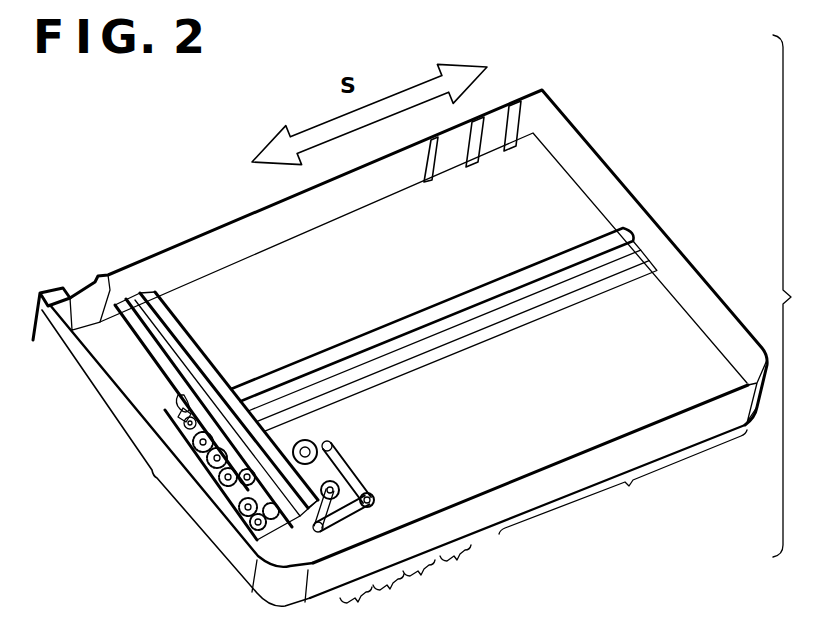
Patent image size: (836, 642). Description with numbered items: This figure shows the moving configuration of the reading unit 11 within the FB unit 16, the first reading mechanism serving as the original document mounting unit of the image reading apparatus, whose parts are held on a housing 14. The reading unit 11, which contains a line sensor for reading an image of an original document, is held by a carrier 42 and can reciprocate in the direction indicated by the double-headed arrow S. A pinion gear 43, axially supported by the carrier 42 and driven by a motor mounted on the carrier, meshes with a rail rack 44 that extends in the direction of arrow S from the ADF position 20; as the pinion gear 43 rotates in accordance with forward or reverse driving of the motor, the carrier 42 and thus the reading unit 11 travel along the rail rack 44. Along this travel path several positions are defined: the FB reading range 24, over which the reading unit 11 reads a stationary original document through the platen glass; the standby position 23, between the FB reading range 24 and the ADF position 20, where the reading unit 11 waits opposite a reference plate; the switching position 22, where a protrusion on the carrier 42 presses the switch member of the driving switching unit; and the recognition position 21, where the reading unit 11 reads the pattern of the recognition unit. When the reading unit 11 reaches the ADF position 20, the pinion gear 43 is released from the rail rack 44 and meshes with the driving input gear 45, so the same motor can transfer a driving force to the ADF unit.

The reading unit 11 is at (192, 370).
The housing 14 is at (568, 143).
The FB unit 16 is at (802, 296).
The ADF position 20 is at (357, 607).
The recognition position 21 is at (392, 595).
The switching position 22 is at (425, 582).
The standby position 23 is at (462, 567).
The FB reading range 24 is at (529, 491).
The carrier 42 is at (167, 312).
The pinion gear 43 is at (177, 400).
The rail rack 44 is at (385, 340).
The driving input gear 45 is at (167, 418).